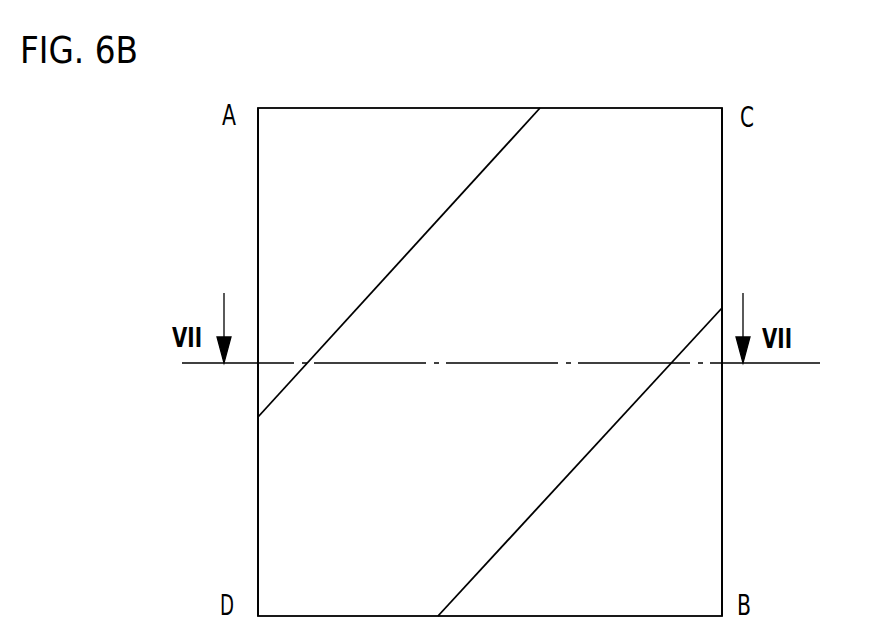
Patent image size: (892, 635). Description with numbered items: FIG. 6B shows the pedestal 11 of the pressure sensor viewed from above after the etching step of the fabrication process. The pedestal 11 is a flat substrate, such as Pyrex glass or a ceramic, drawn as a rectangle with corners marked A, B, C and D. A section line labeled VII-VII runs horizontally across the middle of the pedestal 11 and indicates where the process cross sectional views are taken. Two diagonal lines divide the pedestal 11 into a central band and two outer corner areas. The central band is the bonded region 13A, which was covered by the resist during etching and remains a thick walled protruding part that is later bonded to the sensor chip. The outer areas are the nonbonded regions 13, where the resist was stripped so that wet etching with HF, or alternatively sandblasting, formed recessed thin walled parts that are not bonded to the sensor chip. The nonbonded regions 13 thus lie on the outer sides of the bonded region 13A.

The pedestal 11 is at (710, 167).
The nonbonded regions 13 is at (267, 178).
The bonded region 13A is at (710, 224).